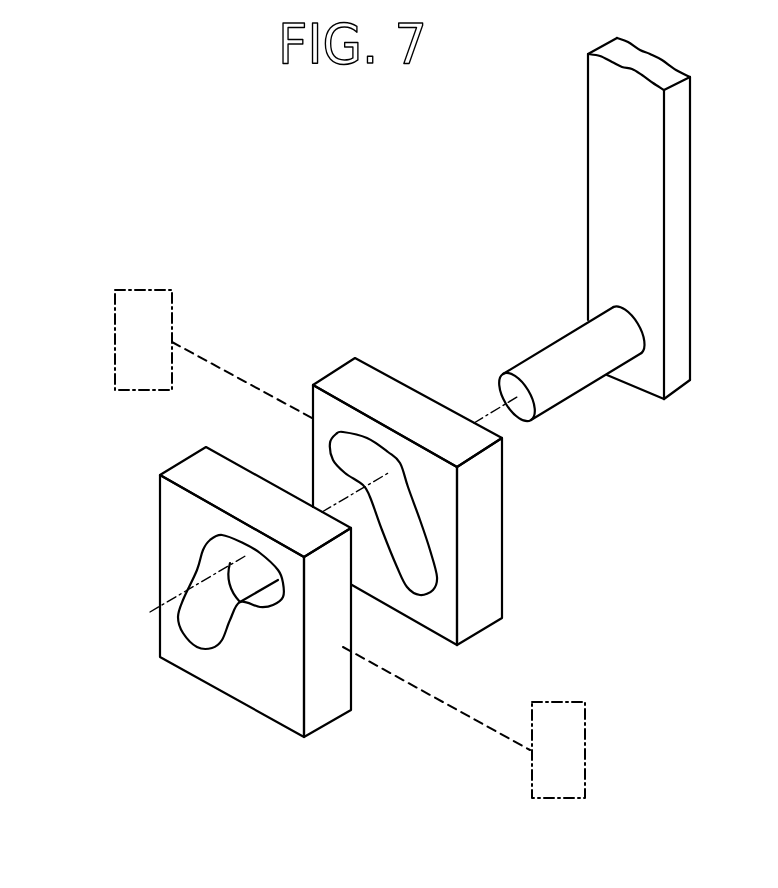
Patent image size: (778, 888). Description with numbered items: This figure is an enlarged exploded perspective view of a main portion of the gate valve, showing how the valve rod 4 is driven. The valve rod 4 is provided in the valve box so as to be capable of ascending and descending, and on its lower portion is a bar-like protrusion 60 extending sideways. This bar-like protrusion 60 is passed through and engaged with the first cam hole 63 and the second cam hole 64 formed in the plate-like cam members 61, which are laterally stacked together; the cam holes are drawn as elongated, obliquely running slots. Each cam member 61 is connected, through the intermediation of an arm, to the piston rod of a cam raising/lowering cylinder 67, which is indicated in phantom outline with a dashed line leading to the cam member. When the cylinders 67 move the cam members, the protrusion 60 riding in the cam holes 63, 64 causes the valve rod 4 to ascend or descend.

The valve rod 4 is at (678, 307).
The bar-like protrusion 60 is at (557, 374).
The first cam member 61 is at (480, 607).
The first cam hole 63 is at (410, 530).
The second cam hole 64 is at (208, 612).
The first cam raising/lowering cylinder 67 is at (127, 340).